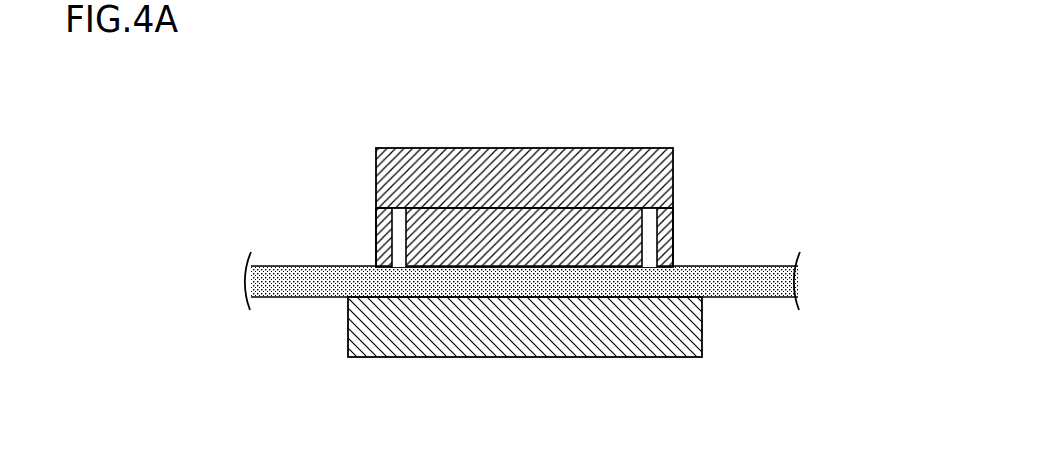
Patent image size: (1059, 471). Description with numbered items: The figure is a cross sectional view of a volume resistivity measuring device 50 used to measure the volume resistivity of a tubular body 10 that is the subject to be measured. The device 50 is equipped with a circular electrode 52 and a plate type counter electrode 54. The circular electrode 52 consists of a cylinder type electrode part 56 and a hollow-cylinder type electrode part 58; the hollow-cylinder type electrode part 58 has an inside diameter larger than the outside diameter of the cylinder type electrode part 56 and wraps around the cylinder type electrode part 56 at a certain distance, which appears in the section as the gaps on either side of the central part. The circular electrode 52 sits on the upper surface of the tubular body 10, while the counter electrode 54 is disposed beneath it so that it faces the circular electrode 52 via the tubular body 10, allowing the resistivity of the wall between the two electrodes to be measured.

The volume resistivity measuring device 50 is at (523, 231).
The circular electrode 52 is at (576, 147).
The cylinder type electrode part 56 is at (608, 220).
The hollow-cylinder type electrode part 58 is at (668, 222).
The tubular body 10 is at (765, 266).
The plate type counter electrode 54 is at (634, 347).